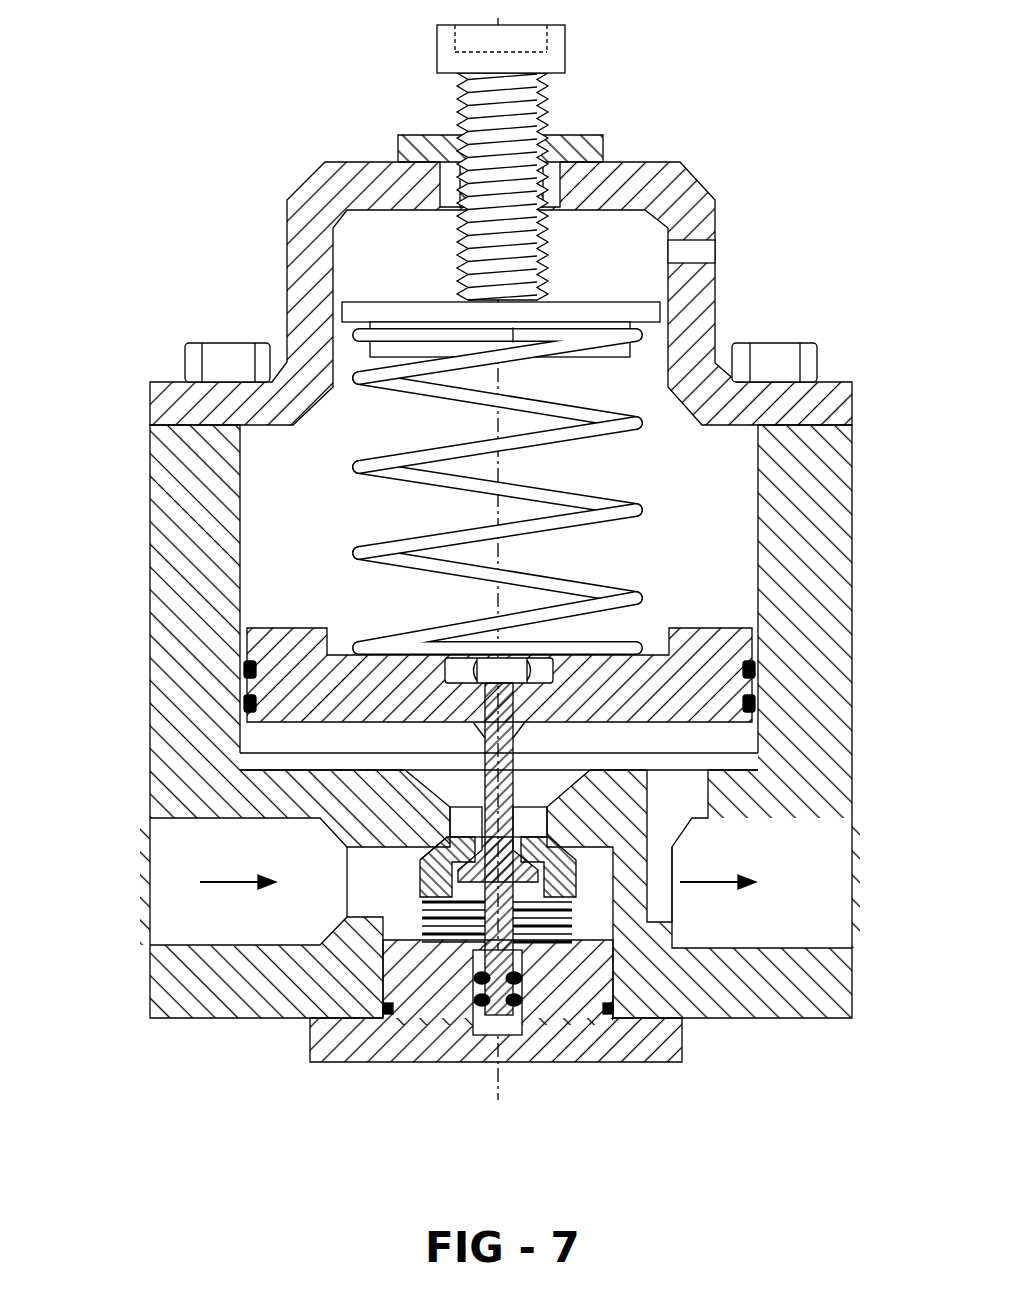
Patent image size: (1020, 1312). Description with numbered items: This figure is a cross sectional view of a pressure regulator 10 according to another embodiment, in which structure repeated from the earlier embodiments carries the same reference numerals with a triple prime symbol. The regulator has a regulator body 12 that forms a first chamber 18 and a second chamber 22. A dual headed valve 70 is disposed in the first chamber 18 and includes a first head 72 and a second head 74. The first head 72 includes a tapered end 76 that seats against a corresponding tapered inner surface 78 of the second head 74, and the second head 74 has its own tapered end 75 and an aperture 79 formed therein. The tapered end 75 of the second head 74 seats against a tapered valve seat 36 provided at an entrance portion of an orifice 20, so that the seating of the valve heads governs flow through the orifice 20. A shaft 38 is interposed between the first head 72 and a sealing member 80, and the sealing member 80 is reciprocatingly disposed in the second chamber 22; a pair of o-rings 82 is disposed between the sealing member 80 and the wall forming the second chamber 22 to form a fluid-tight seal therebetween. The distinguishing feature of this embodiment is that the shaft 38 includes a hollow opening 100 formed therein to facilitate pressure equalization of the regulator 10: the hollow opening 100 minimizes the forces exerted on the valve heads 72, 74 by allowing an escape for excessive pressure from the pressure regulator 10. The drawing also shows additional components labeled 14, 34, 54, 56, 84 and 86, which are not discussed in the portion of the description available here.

The pressure regulator 10 is at (712, 158).
The regulator body 12 is at (315, 190).
The inlet port 14 is at (182, 840).
The first chamber 18 is at (332, 1012).
The orifice 20 is at (479, 838).
The second chamber 22 is at (276, 736).
The bottom plug 34 is at (516, 960).
The tapered valve seat 36 is at (446, 832).
The shaft 38 is at (470, 737).
The main spring 54 is at (386, 452).
The fastening nut 56 is at (277, 447).
The dual headed valve 70 is at (456, 900).
The first head 72 is at (578, 868).
The second head 74 is at (546, 830).
The tapered end 75 is at (441, 841).
The tapered end 76 is at (528, 838).
The tapered inner surface 78 is at (441, 870).
The aperture 79 is at (440, 848).
The sealing member 80 is at (290, 642).
The o-rings 82 is at (246, 666).
The stem nut 84 is at (600, 656).
The spring plate 86 is at (586, 302).
The hollow opening 100 is at (522, 964).